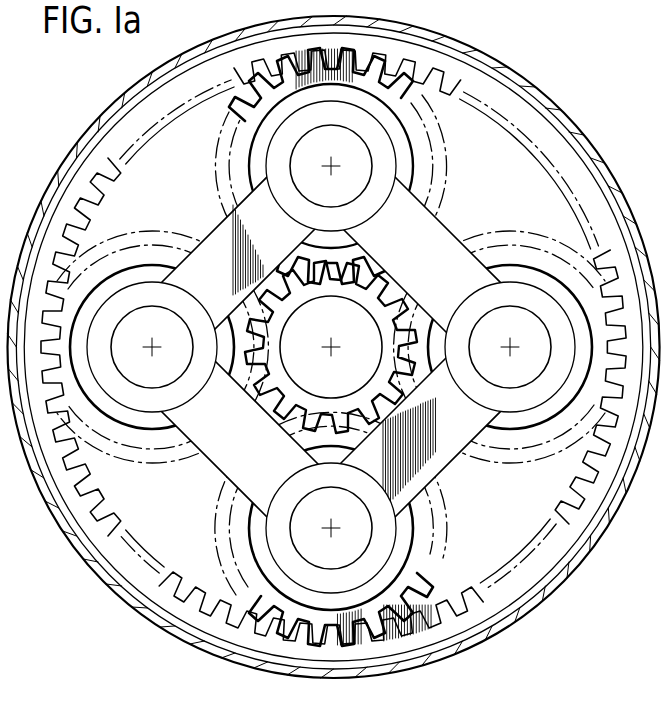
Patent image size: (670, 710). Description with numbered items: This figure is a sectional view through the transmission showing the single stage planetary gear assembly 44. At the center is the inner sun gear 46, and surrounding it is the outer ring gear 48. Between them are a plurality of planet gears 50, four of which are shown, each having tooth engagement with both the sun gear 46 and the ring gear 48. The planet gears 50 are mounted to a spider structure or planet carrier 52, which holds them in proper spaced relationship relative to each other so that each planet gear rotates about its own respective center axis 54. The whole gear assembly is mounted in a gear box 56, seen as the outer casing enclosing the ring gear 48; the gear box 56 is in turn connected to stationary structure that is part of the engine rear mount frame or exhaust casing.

The single stage planetary gear assembly 44 is at (481, 43).
The gear box 56 is at (543, 97).
The outer ring gear 48 is at (449, 92).
The planet gears 50 is at (573, 240).
The inner sun gear 46 is at (368, 310).
The planet carrier 52 is at (461, 241).
The center axis 54 is at (506, 343).